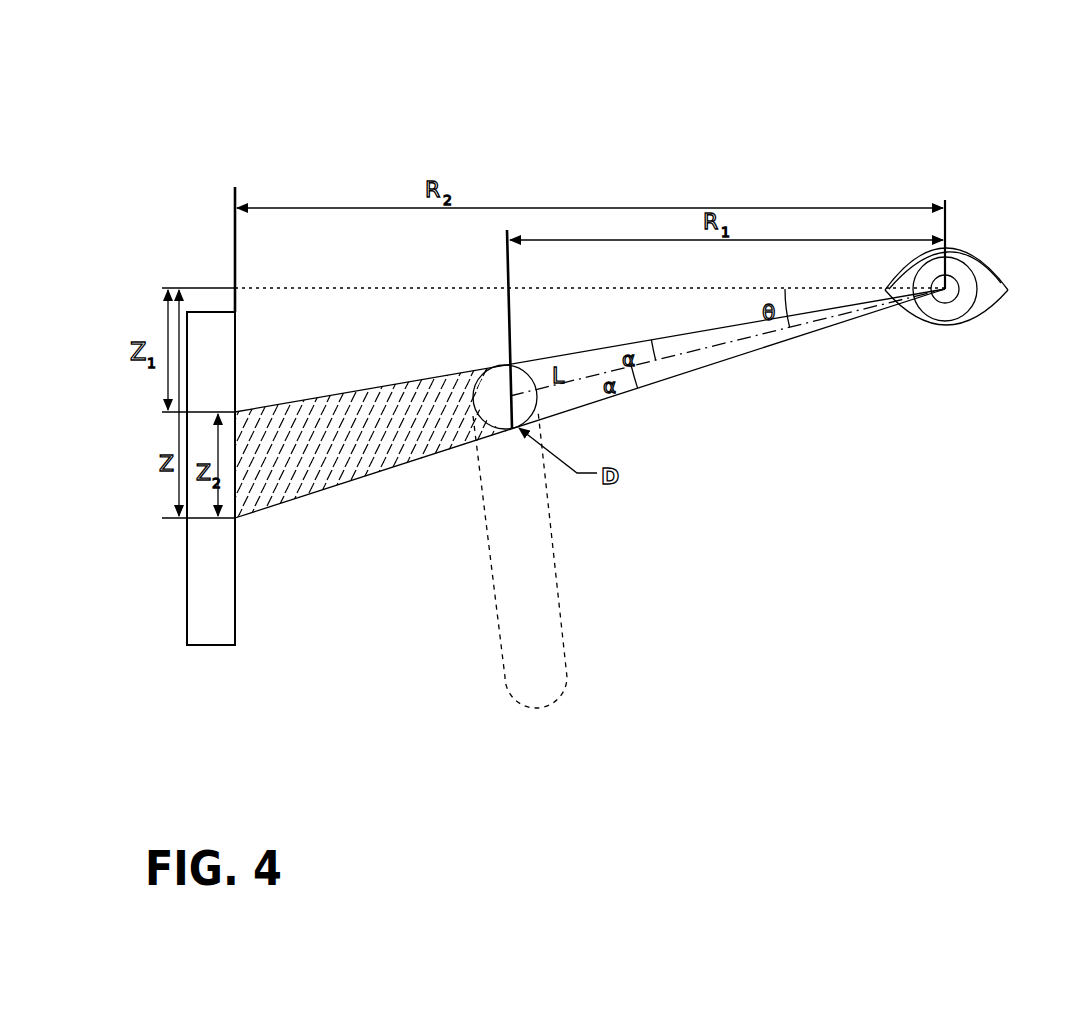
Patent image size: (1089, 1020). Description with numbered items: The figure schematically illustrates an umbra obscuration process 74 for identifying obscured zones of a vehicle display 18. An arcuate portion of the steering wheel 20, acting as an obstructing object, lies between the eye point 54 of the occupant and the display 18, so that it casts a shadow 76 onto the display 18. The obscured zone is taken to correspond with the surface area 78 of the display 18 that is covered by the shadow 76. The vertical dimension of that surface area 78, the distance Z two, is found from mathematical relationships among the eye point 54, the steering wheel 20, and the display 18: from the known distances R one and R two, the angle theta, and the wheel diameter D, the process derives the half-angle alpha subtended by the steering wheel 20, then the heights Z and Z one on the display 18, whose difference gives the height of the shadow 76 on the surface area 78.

The display 18 is at (241, 611).
The steering wheel 20 is at (565, 642).
The eye point 54 is at (958, 297).
The umbra obscuration process 74 is at (968, 129).
The shadow 76 is at (364, 452).
The surface area 78 is at (239, 426).